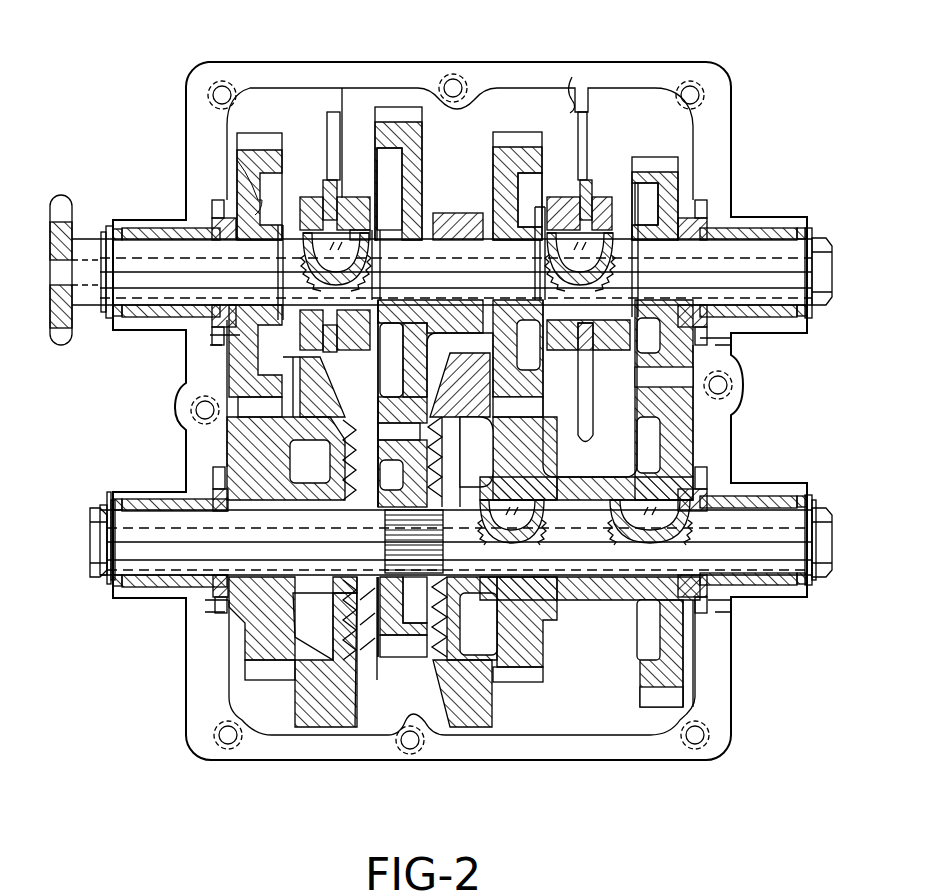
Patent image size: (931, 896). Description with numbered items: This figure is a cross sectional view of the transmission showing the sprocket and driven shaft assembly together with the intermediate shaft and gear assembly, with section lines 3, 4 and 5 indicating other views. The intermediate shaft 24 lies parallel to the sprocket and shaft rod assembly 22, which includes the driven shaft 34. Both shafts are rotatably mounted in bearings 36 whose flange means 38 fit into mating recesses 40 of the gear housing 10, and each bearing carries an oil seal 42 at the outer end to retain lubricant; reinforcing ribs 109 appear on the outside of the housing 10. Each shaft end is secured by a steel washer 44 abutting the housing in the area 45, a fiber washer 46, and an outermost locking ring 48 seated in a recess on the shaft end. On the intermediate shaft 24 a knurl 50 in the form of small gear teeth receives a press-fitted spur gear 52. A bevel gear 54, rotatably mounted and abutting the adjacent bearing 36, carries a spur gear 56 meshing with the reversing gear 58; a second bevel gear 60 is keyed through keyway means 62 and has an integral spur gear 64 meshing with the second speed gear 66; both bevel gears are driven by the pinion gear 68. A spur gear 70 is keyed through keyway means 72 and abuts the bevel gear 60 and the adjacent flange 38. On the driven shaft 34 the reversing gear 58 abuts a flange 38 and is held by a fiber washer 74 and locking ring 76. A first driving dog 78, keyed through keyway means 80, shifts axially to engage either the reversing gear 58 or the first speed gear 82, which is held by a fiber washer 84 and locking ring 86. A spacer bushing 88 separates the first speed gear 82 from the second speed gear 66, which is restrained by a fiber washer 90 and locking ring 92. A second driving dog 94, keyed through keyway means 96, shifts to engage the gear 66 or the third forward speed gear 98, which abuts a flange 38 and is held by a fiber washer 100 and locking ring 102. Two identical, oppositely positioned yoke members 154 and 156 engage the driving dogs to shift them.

The section line 3- 3 is at (457, 10).
The section line 4- 4 is at (35, 518).
The section line 5- 5 is at (30, 250).
The gear housing 10 is at (186, 452).
The sprocket and shaft rod assembly 22 is at (52, 258).
The intermediate shaft 24 is at (90, 545).
The driven shaft 34 is at (80, 240).
The bearings 36 is at (147, 228).
The flange means 38 is at (210, 215).
The mating recesses 40 is at (215, 340).
The oil seal 42 is at (116, 229).
The steel washer 44 is at (109, 320).
The area of housing abutted by steel washer 45 is at (114, 500).
The fiber washer 46 is at (103, 503).
The locking ring 48 is at (103, 312).
The knurl 50 is at (383, 525).
The spur gear 52 is at (405, 658).
The bevel gear 54 is at (345, 722).
The spur gear 56 is at (273, 680).
The reversing gear 58 is at (258, 133).
The second bevel gear 60 is at (440, 727).
The keyway means 62 is at (545, 520).
The spur gear 64 is at (515, 682).
The second speed gear 66 is at (515, 132).
The pinion gear 68 is at (345, 615).
The spur gear 70 is at (652, 710).
The keyway means 72 is at (680, 532).
The fiber washer 74 is at (258, 215).
The locking ring 76 is at (264, 200).
The first driving dog 78 is at (322, 180).
The keyway means 80 is at (300, 250).
The first speed gear 82 is at (392, 107).
The fiber washer 84 is at (385, 240).
The locking ring 86 is at (378, 230).
The spacer bushing 88 is at (458, 240).
The fiber washer 90 is at (538, 215).
The locking ring 92 is at (541, 240).
The second driving dog 94 is at (600, 185).
The keyway means 96 is at (625, 256).
The third forward speed gear 98 is at (678, 157).
The fiber washer 100 is at (655, 185).
The locking ring 102 is at (633, 200).
The reinforcing ribs 109 is at (572, 80).
The yoke member 154 is at (345, 360).
The yoke member 156 is at (590, 352).